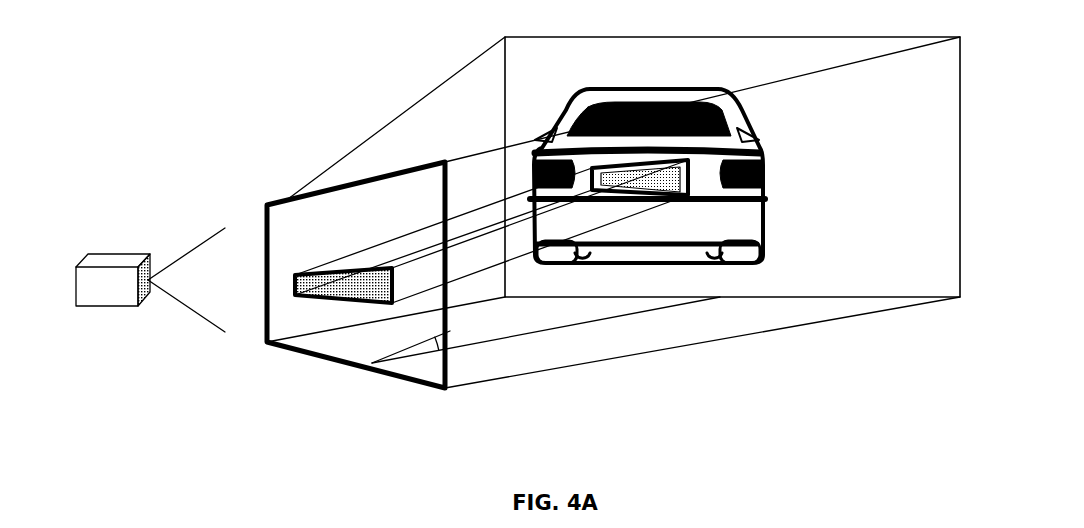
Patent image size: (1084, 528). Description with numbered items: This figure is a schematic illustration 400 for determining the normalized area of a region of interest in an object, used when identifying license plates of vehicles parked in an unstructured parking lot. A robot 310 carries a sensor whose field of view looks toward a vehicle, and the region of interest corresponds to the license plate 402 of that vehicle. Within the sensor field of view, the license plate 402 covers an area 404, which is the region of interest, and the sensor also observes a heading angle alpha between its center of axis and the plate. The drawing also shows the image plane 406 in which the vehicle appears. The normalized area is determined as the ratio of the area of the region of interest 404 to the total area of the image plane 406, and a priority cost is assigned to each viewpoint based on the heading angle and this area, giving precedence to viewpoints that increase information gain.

The robot 310 is at (124, 256).
The projection system arrangement 400 is at (276, 427).
The license plate 402 is at (688, 184).
The area covered by the license plate 404 is at (294, 274).
The image plane 406 is at (289, 198).